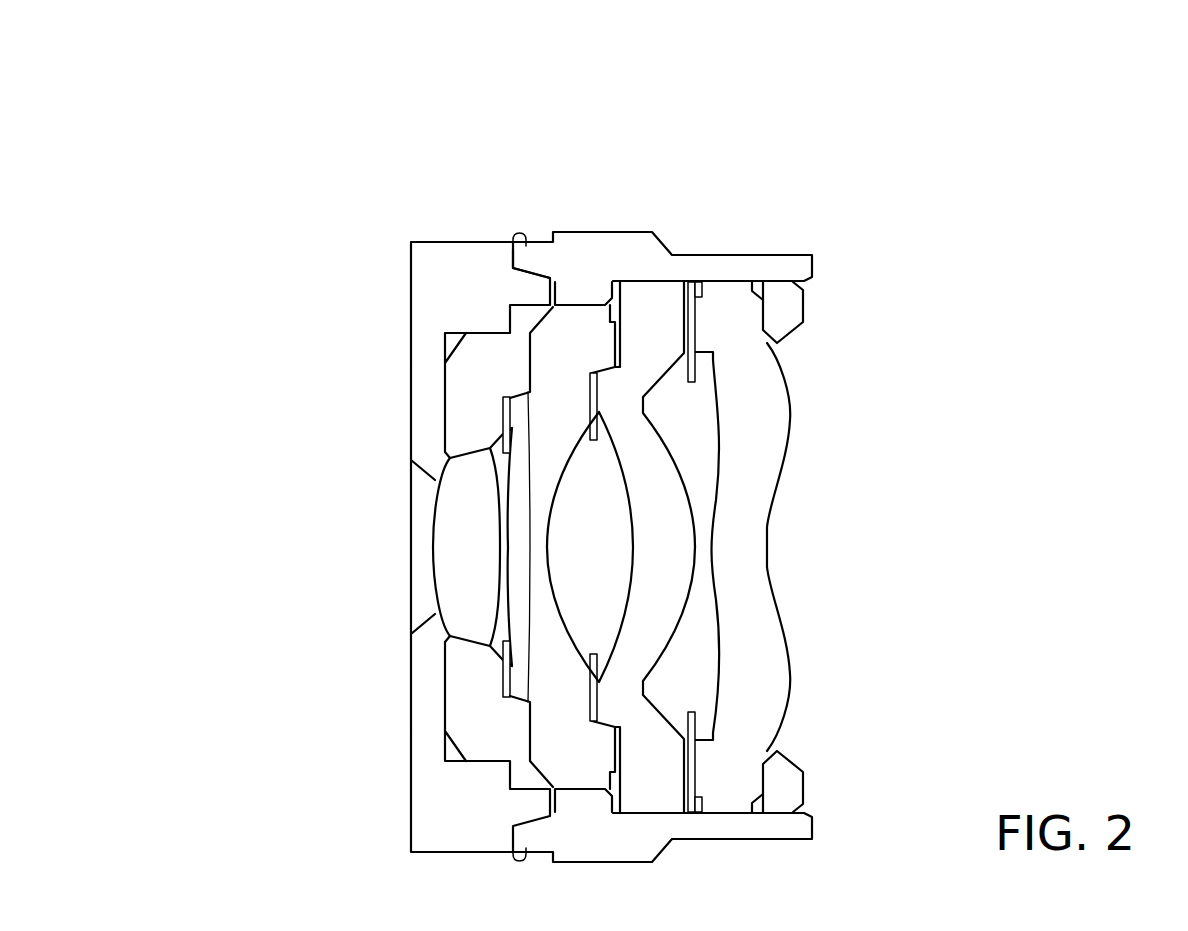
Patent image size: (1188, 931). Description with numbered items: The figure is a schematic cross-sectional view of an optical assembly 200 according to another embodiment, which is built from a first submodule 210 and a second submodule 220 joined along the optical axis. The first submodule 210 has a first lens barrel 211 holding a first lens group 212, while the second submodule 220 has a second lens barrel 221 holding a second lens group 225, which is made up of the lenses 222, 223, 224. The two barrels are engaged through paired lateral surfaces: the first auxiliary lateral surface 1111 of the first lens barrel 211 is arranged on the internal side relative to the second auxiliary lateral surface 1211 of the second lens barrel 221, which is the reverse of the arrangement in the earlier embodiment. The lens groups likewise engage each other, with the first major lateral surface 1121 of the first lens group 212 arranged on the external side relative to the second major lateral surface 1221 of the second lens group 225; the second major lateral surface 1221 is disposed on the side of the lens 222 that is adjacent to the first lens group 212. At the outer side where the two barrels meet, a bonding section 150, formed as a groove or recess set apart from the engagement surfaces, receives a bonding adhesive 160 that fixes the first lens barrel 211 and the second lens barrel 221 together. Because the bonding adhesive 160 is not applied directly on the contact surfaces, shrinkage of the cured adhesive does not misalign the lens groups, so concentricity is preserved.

The optical assembly 200 is at (245, 868).
The first submodule 210 is at (310, 305).
The first lens barrel 211 is at (427, 338).
The first lens group 212 is at (442, 508).
The second submodule 220 is at (592, 77).
The second lens barrel 221 is at (762, 275).
The lens 222 is at (590, 313).
The lens 223 is at (648, 303).
The lens 224 is at (715, 300).
The second lens group 225 is at (717, 140).
The bonding section 150 is at (518, 236).
The bonding adhesive 160 is at (520, 858).
The first auxiliary lateral surface 1111 is at (540, 270).
The first major lateral surface 1121 is at (528, 397).
The second auxiliary lateral surface 1211 is at (527, 268).
The second major lateral surface 1221 is at (517, 392).